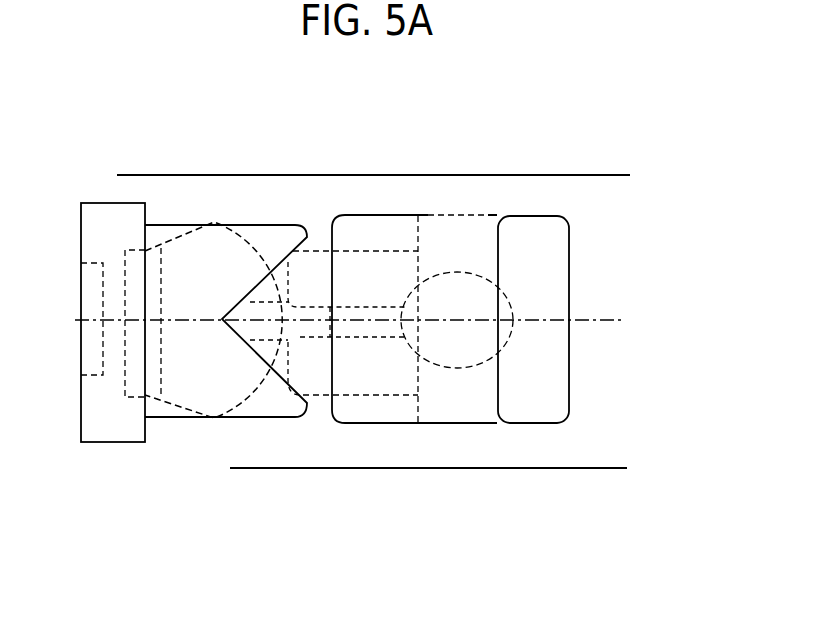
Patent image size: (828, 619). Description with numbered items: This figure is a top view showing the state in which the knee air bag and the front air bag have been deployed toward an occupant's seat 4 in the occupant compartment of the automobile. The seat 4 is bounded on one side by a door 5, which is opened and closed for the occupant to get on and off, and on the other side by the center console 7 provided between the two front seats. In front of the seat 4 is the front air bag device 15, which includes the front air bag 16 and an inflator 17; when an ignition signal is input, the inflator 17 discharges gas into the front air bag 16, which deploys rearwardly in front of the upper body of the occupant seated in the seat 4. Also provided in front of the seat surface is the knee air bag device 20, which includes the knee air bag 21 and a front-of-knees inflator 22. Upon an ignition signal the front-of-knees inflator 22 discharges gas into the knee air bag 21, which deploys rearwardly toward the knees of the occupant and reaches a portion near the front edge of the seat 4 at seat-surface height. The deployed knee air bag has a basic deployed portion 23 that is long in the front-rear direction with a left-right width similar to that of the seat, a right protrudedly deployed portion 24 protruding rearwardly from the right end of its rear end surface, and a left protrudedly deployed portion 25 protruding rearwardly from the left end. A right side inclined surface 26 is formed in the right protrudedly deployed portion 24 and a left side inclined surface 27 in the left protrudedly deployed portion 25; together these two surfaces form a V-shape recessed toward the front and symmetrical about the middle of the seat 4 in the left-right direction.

The seat 4 is at (532, 417).
The door 5 is at (605, 175).
The center console 7 is at (603, 468).
The front air bag device 15 is at (138, 116).
The front air bag 16 is at (209, 257).
The inflator 17 is at (146, 223).
The knee air bag device 20 is at (337, 527).
The knee air bag 21 is at (293, 535).
The front-of-knees inflator 22 is at (95, 377).
The basic deployed portion 23 is at (185, 418).
The right protrudedly deployed portion 24 is at (257, 250).
The left protrudedly deployed portion 25 is at (278, 398).
The right side inclined surface 26 is at (258, 285).
The left side inclined surface 27 is at (281, 373).